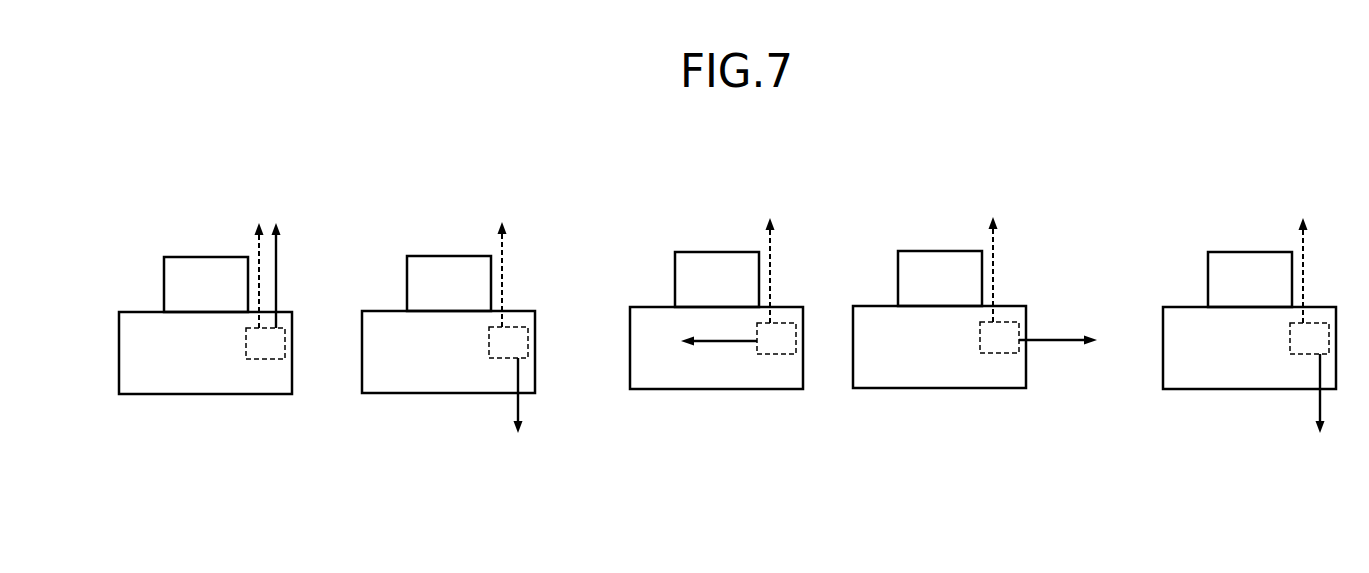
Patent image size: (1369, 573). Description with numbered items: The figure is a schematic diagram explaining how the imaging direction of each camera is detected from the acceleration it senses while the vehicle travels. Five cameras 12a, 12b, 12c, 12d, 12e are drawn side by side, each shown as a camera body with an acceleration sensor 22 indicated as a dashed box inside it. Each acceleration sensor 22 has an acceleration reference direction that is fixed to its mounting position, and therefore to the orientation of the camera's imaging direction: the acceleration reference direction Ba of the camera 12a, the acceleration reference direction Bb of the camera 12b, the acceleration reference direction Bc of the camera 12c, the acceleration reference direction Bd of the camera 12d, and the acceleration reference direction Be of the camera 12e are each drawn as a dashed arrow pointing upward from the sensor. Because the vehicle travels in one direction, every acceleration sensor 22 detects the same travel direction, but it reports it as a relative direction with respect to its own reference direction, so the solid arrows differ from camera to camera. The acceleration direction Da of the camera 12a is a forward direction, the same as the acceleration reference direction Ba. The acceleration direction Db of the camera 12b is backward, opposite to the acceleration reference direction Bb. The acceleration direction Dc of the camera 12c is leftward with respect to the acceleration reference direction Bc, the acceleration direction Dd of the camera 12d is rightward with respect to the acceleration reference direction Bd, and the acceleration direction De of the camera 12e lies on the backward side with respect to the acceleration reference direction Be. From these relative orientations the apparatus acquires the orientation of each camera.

The camera 12a is at (163, 412).
The camera 12b is at (448, 373).
The camera 12c is at (716, 369).
The camera 12d is at (939, 368).
The camera 12e is at (1249, 369).
The acceleration sensor 22 is at (262, 370).
The acceleration reference direction Ba is at (253, 240).
The acceleration reference direction Bb is at (490, 239).
The acceleration reference direction Bc is at (758, 235).
The acceleration reference direction Bd is at (980, 234).
The acceleration reference direction Be is at (1291, 235).
The acceleration direction Da is at (278, 243).
The acceleration direction Db is at (531, 425).
The acceleration direction Dc is at (719, 249).
The acceleration direction Dd is at (1057, 249).
The acceleration direction De is at (1333, 423).